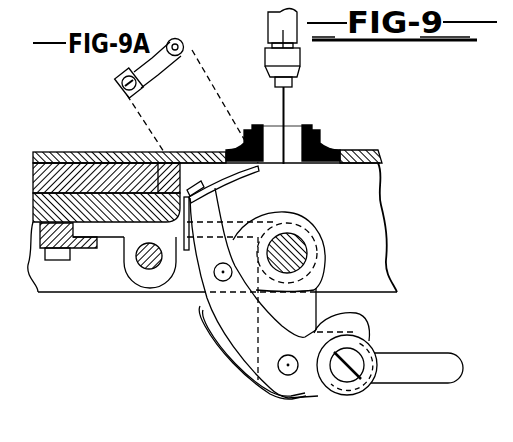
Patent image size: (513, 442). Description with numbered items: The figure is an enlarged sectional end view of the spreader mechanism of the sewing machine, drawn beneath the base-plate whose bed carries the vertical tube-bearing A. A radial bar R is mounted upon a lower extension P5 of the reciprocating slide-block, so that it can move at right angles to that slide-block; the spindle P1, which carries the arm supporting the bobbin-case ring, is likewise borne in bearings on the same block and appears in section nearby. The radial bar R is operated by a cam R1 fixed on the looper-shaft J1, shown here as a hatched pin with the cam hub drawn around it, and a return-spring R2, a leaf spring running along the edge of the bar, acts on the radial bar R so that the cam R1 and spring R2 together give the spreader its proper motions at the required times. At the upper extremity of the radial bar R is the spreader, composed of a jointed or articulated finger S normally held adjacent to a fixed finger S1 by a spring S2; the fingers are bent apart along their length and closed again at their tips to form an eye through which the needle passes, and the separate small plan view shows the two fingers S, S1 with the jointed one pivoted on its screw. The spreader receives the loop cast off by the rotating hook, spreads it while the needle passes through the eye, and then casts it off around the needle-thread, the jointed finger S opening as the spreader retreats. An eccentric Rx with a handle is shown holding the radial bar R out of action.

In FIG. 9A, the jointed finger S is at (143, 77).
In FIG. 9, the jointed finger S is at (246, 171).
In FIG. 9A, the fixed finger S1 is at (190, 52).
In FIG. 9, the fixed finger S1 is at (217, 181).
In FIG. 9, the spring S2 is at (185, 219).
In FIG. 9, the looper-shaft J1 is at (296, 236).
In FIG. 9, the spindle P1 is at (137, 261).
In FIG. 9, the lower extension P5 is at (323, 407).
In FIG. 9, the vertical tube-bearing A is at (55, 244).
In FIG. 9, the radial bar R is at (254, 293).
In FIG. 9, the cam R1 is at (257, 292).
In FIG. 9, the return-spring R2 is at (228, 350).
In FIG. 9, the eccentric Rx is at (404, 362).